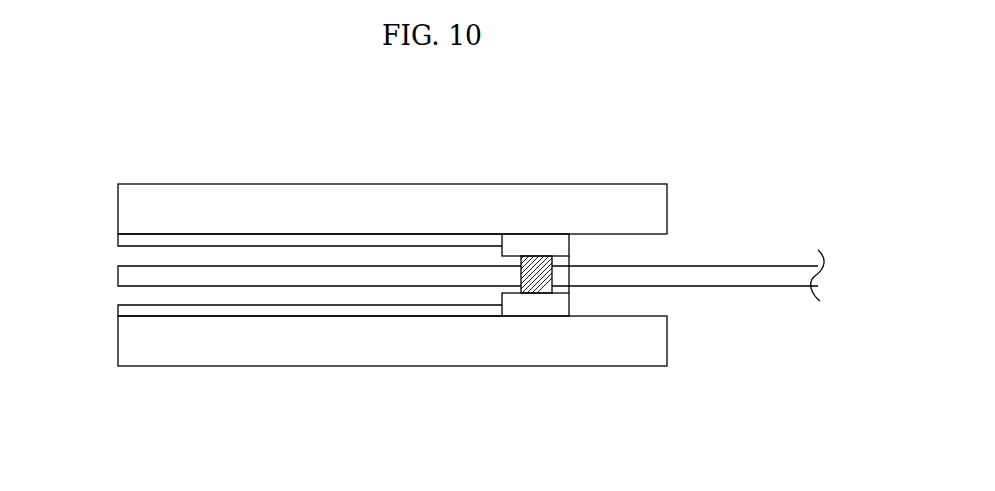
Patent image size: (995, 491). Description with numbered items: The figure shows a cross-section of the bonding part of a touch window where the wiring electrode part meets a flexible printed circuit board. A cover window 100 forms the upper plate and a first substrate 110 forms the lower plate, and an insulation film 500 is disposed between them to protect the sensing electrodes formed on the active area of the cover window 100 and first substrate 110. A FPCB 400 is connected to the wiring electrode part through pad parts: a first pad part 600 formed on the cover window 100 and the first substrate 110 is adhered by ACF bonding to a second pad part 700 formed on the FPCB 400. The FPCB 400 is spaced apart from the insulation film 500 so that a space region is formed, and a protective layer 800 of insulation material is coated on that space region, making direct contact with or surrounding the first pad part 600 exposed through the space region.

The cover window 100 is at (128, 210).
The first substrate 110 is at (128, 344).
The FPCB 400 is at (128, 240).
The insulation film 500 is at (128, 276).
The first pad part 600 is at (535, 244).
The second pad part 700 is at (562, 290).
The protective layer 800 is at (534, 296).